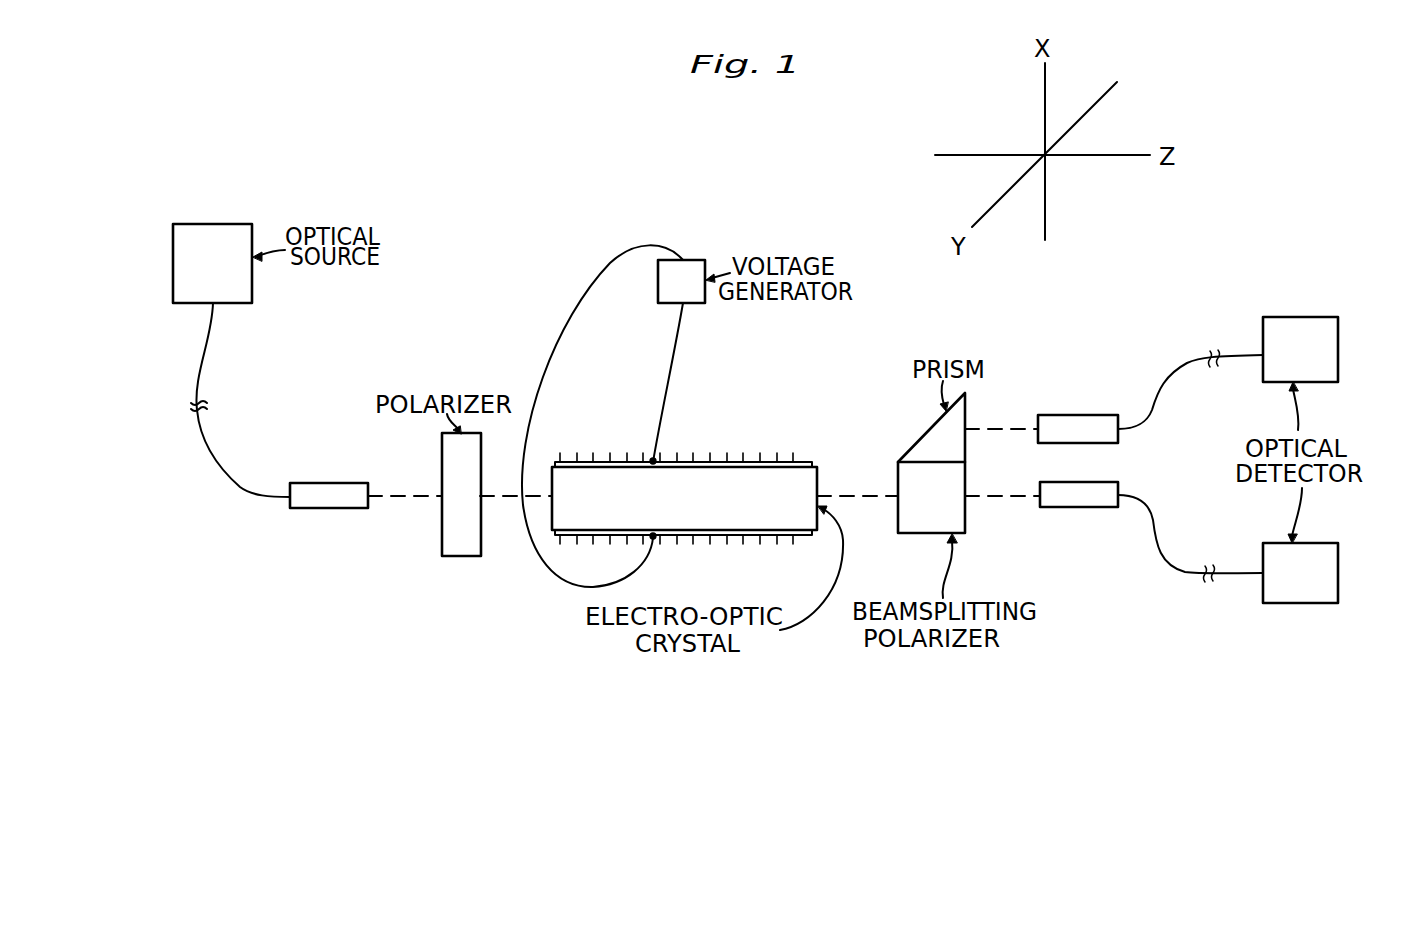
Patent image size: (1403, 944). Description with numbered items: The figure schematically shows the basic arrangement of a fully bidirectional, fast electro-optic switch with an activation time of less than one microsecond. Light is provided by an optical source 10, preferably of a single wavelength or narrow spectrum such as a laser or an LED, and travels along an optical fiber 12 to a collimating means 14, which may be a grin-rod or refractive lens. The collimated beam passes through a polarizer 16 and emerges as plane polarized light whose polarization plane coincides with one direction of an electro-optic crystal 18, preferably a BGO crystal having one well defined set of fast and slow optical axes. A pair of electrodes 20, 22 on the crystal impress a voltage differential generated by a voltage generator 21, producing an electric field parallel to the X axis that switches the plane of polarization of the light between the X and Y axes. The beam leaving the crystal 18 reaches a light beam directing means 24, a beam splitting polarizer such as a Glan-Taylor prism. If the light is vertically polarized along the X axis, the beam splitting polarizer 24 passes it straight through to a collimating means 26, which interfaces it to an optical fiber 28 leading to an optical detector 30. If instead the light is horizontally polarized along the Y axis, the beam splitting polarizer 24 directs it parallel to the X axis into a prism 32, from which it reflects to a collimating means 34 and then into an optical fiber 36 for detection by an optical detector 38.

The optical source 10 is at (219, 278).
The optical fiber 12 is at (207, 445).
The collimating means 14 is at (332, 509).
The polarizer 16 is at (466, 557).
The electro-optic crystal 18 is at (751, 513).
The electrode 20 is at (753, 462).
The voltage generator 21 is at (692, 293).
The electrode 22 is at (757, 536).
The light beam directing means 24 is at (933, 534).
The collimating means 26 is at (1094, 508).
The optical fiber 28 is at (1155, 522).
The optical detector 30 is at (1313, 588).
The prism 32 is at (938, 427).
The collimating means 34 is at (1084, 414).
The optical fiber 36 is at (1157, 392).
The optical detector 38 is at (1310, 363).